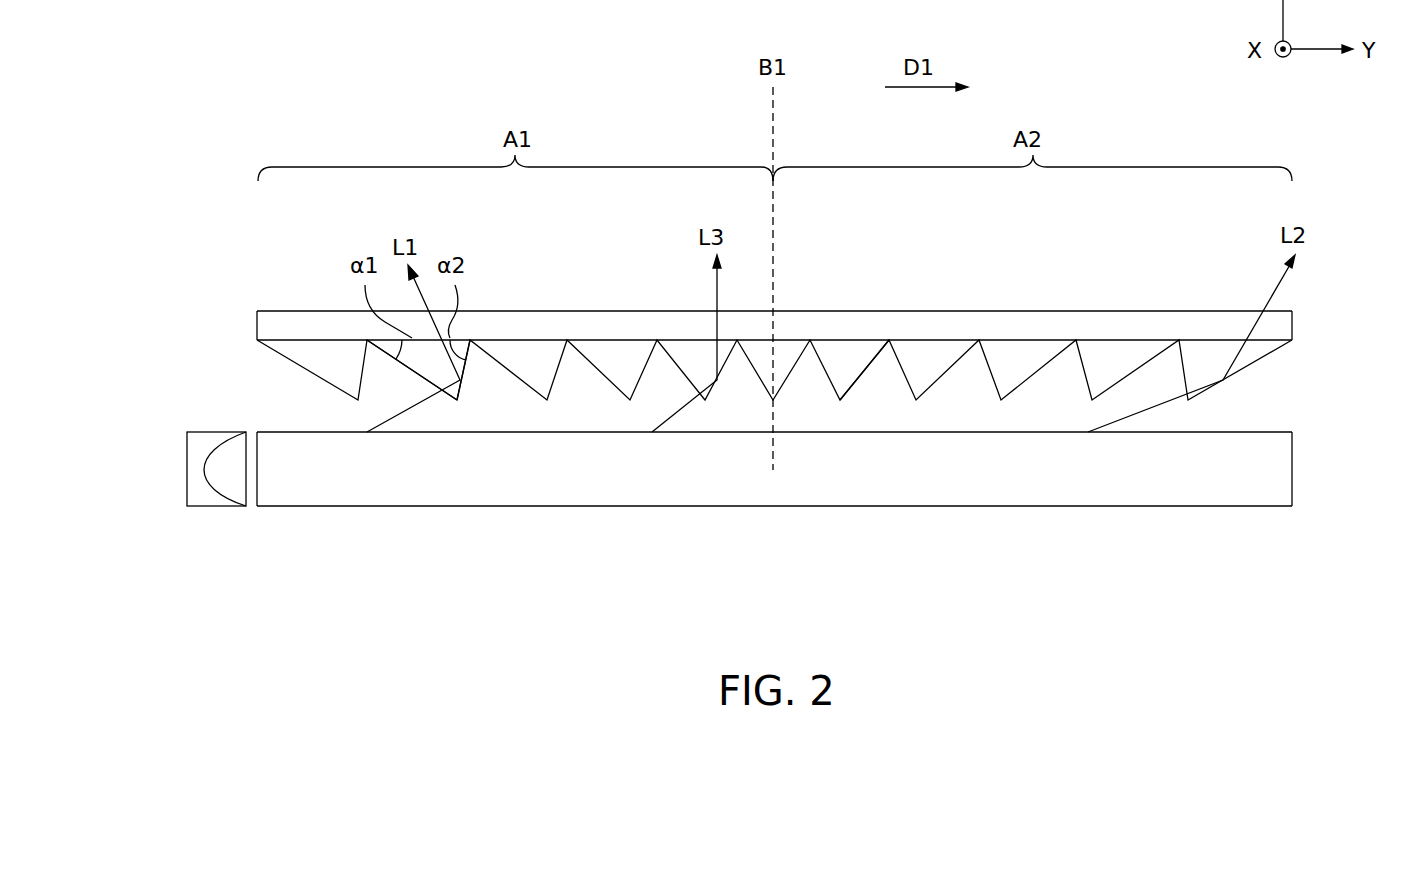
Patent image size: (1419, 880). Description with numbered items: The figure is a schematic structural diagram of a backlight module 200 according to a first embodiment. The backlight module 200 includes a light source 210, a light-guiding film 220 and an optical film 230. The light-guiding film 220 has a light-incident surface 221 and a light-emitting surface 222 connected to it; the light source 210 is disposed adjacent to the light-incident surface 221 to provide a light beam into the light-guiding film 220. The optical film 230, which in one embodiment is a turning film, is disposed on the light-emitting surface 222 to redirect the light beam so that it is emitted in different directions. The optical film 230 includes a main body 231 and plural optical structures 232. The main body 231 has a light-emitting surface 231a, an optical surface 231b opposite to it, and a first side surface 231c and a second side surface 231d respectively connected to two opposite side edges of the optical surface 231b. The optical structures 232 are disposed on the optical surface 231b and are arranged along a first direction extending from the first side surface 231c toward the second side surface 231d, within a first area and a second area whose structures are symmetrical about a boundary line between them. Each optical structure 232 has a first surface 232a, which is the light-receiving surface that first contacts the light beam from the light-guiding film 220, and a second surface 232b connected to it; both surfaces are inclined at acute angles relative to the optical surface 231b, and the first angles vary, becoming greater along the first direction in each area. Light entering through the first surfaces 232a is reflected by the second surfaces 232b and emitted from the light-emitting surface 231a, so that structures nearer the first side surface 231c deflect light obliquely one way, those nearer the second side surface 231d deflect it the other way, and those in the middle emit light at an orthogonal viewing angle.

The backlight module 200 is at (178, 208).
The light source 210 is at (195, 470).
The light-guiding film 220 is at (808, 508).
The light-incident surface 221 is at (256, 489).
The light-emitting surface 222 is at (1255, 430).
The optical film 230 is at (768, 383).
The main body 231 is at (768, 303).
The light-emitting surface 231a is at (822, 311).
The optical surface 231b is at (872, 350).
The first side surface 231c is at (257, 318).
The second side surface 231d is at (1295, 327).
The optical structures 232 is at (774, 390).
The first surface 232a is at (443, 390).
The second surface 232b is at (465, 362).